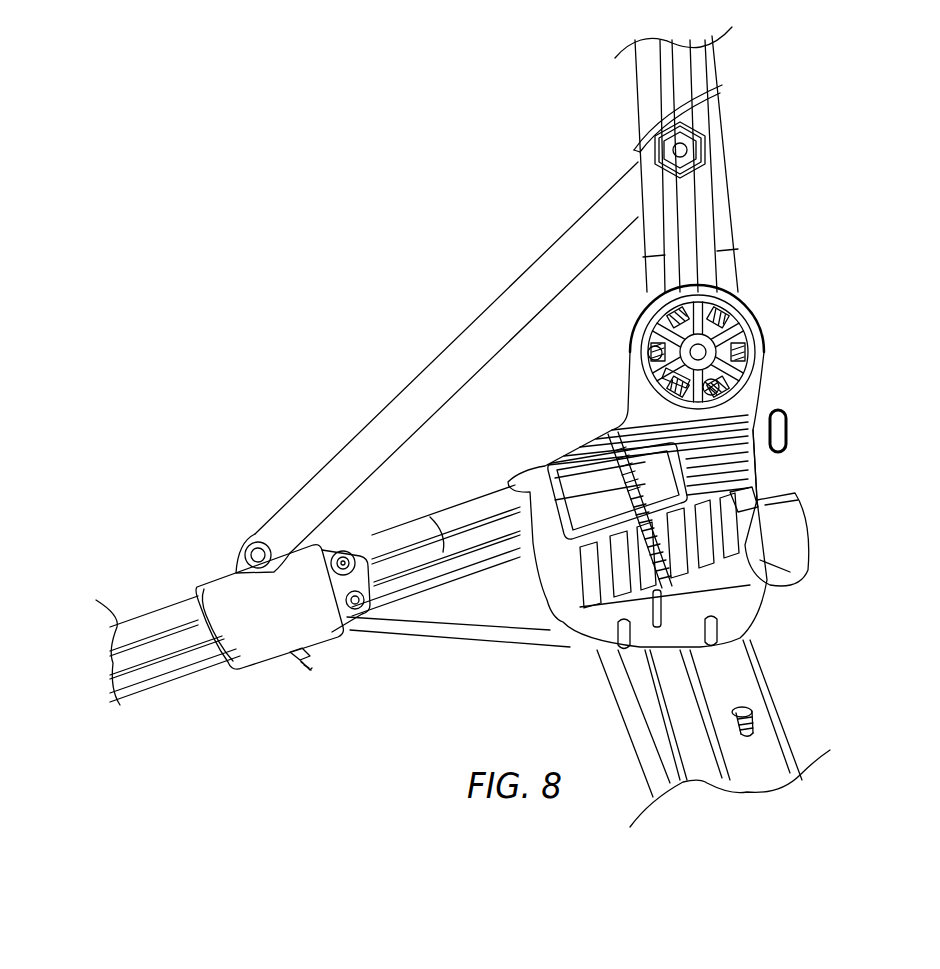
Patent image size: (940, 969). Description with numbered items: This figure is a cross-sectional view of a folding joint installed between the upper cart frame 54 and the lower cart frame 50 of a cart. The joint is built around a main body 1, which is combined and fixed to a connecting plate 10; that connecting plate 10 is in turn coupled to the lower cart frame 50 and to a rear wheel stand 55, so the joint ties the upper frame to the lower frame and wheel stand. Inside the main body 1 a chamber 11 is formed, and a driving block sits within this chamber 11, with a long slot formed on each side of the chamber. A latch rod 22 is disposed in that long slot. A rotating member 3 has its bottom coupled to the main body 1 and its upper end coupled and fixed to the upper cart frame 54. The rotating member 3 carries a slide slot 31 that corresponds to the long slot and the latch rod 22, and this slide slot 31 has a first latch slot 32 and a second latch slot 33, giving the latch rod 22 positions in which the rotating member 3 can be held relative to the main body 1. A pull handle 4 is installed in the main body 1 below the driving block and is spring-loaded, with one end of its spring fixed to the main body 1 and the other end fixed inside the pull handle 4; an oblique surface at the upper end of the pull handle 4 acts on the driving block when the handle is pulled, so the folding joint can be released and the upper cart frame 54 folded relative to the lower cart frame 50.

The upper cart frame 54 is at (697, 75).
The main body 1 is at (753, 327).
The rotating member 3 is at (750, 357).
The second latch slot 33 is at (648, 356).
The first latch slot 32 is at (714, 388).
The latch rod 22 is at (800, 390).
The slide slot 31 is at (690, 372).
The connecting plate 10 is at (573, 628).
The chamber 11 is at (745, 505).
The pull handle 4 is at (790, 540).
The rear wheel stand 55 is at (740, 680).
The lower cart frame 50 is at (470, 568).